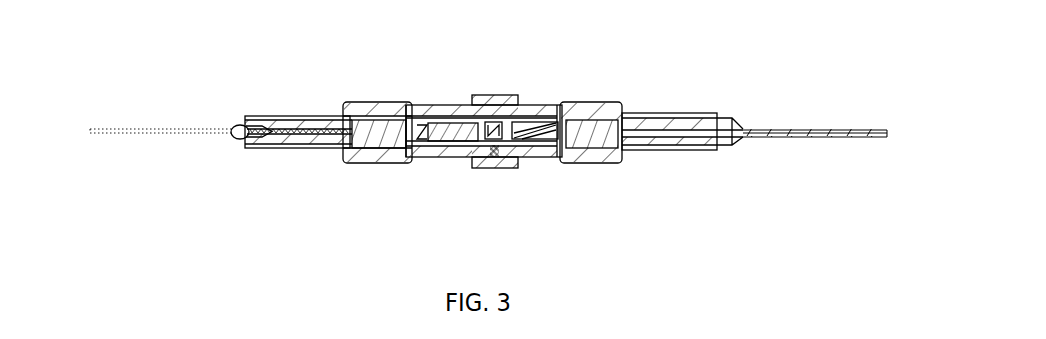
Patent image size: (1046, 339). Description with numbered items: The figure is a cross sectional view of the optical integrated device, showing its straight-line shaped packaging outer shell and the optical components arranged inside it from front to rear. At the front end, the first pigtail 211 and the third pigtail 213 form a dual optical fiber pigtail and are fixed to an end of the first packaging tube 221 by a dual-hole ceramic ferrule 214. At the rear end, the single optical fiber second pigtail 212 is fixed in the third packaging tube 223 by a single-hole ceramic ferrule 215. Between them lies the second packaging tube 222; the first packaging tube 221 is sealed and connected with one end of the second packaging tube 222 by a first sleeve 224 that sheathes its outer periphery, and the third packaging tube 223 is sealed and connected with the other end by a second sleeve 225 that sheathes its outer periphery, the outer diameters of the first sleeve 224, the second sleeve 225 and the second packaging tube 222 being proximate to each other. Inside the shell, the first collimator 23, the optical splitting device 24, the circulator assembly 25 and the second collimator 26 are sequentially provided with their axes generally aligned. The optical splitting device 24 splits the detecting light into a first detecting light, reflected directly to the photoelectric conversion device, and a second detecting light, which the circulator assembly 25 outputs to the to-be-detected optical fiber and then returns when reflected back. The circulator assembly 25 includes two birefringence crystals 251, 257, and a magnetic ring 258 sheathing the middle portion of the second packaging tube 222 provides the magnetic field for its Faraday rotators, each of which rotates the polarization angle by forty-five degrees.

The first pigtail 211 is at (273, 116).
The second pigtail 212 is at (746, 125).
The third pigtail 213 is at (267, 140).
The dual-hole ceramic ferrule 214 is at (322, 149).
The single-hole ceramic ferrule 215 is at (683, 150).
The first packaging tube 221 is at (282, 116).
The second packaging tube 222 is at (538, 105).
The third packaging tube 223 is at (660, 113).
The first sleeve 224 is at (386, 102).
The second sleeve 225 is at (602, 102).
The first collimator 23 is at (384, 163).
The optical splitting device 24 is at (427, 157).
The circulator assembly 25 is at (495, 168).
The birefringence crystal 251 is at (445, 110).
The birefringence crystal 257 is at (524, 112).
The magnetic ring 258 is at (490, 97).
The second collimator 26 is at (603, 163).